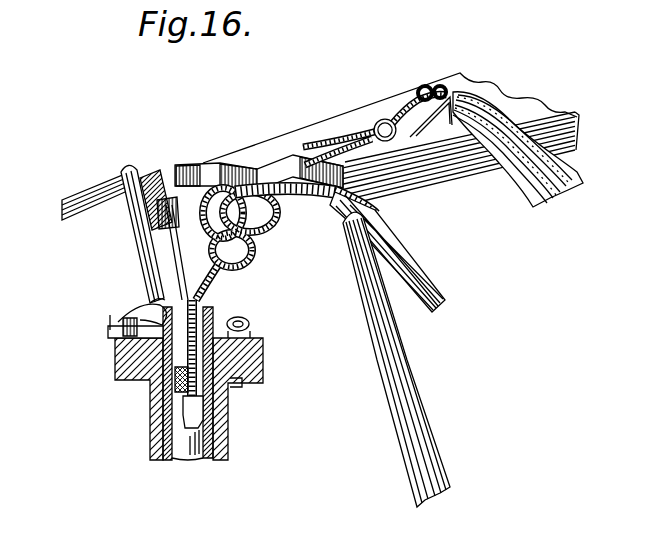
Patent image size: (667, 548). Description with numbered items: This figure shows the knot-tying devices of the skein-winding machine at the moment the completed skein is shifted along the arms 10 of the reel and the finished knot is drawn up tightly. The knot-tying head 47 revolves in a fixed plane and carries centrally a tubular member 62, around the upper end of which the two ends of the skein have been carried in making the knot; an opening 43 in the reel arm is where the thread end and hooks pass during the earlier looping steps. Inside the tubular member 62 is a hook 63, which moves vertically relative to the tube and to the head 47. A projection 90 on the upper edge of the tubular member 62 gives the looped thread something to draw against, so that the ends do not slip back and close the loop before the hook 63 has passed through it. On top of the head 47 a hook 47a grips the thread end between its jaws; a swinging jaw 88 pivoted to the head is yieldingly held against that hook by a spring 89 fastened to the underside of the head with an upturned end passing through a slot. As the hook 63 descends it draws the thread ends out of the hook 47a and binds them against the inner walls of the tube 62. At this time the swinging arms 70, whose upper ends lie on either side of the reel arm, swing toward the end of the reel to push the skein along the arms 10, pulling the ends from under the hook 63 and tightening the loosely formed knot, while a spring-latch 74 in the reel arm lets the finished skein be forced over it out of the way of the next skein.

The arms of the reel 10 is at (456, 157).
The opening 43 is at (275, 180).
The spring-latch 74 is at (456, 100).
The swinging arms 70 is at (150, 268).
The knot-tying head 47 is at (263, 350).
The hook 47a is at (113, 323).
The tubular member 62 is at (153, 405).
The hook 63 is at (183, 435).
The swinging jaw 88 is at (217, 313).
The spring 89 is at (237, 383).
The projection 90 is at (148, 297).